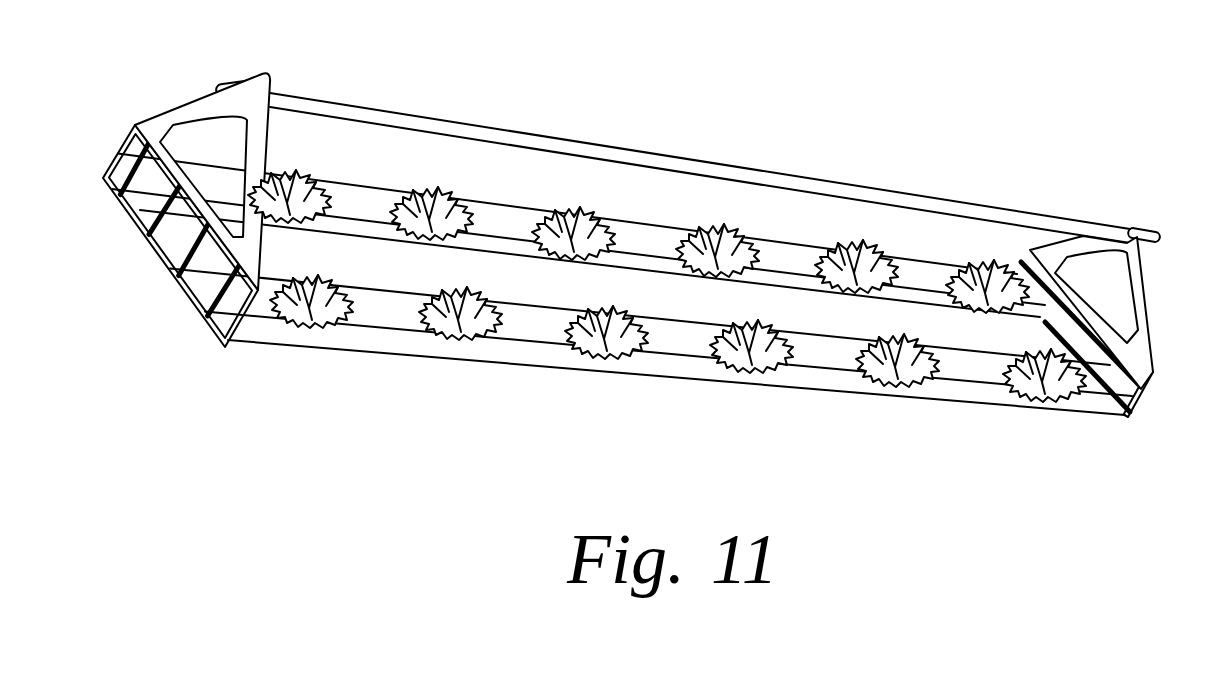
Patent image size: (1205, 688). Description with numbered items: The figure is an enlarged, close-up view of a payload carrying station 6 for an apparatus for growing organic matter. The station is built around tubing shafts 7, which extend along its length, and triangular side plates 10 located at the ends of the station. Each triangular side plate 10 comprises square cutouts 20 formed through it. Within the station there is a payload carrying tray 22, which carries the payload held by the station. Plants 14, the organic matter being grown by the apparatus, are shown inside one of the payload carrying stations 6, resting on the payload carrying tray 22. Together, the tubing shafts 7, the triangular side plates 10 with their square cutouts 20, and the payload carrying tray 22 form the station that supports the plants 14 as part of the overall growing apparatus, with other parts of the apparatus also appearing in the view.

The payload carrying station 6 is at (953, 81).
The tubing shafts 7 is at (479, 122).
The triangular side plates 10 is at (163, 120).
The plants 14 is at (474, 346).
The square cutouts 20 is at (153, 256).
The payload carrying tray 22 is at (846, 387).